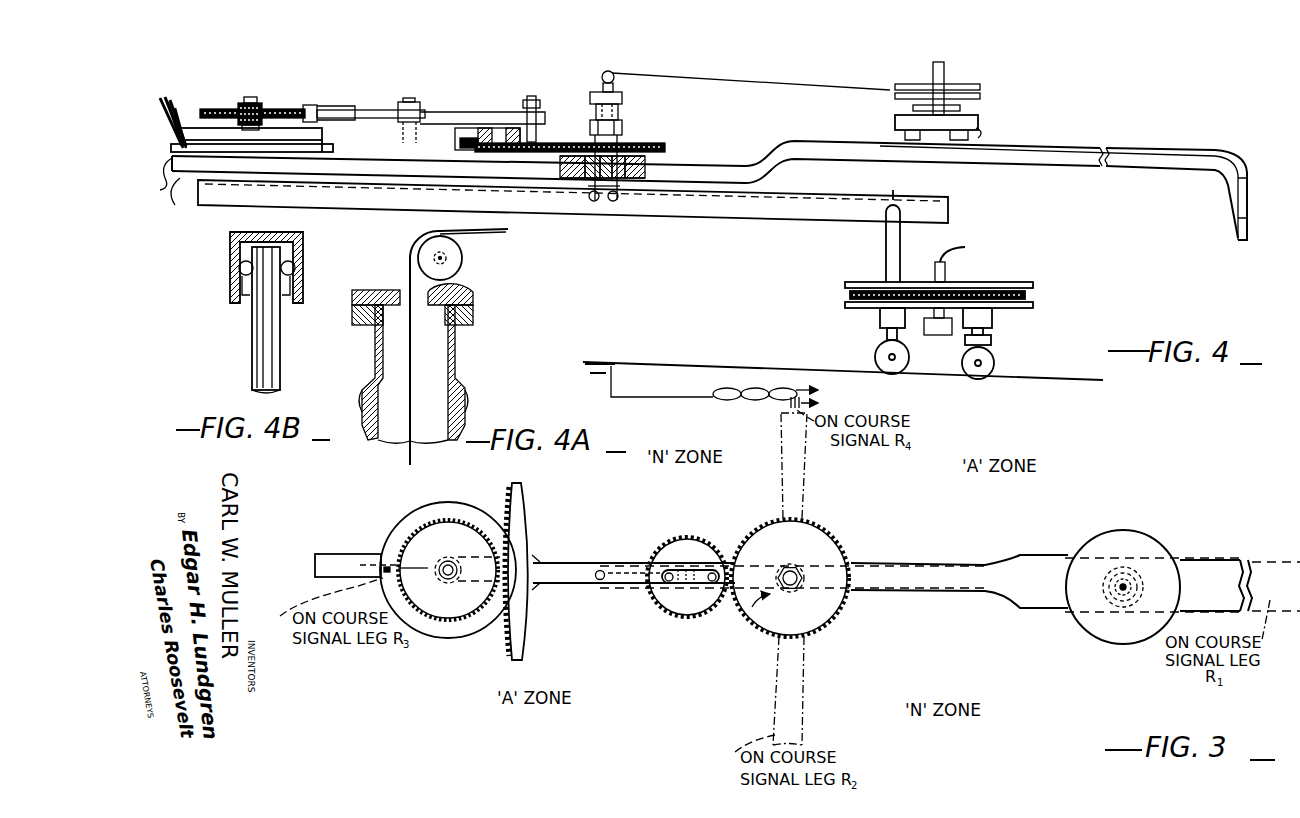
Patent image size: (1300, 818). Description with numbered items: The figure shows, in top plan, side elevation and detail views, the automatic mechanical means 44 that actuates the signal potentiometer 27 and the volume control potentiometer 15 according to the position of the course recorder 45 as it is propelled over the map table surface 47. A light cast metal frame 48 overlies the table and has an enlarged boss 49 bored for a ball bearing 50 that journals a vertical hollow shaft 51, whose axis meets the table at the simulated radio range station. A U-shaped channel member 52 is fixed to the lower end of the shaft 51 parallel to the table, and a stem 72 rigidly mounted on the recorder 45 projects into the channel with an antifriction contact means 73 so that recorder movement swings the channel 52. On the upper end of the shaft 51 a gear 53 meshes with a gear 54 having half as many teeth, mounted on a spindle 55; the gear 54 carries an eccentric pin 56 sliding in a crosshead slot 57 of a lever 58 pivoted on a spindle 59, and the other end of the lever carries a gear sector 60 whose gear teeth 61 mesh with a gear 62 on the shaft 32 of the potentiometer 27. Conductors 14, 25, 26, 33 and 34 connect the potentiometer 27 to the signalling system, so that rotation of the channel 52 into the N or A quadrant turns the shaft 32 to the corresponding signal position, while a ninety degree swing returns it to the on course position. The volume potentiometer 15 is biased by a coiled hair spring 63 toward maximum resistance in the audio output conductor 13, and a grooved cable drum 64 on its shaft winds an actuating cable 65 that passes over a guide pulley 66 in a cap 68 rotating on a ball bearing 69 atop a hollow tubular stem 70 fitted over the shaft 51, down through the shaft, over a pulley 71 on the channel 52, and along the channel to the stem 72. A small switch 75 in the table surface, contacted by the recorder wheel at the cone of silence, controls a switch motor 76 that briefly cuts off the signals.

In FIG. 4, the audio oscillator output circuit conductor 13 is at (985, 125).
In FIG. 4, the conductor 14 is at (182, 146).
In FIG. 4, the volume control potentiometer 15 is at (979, 131).
In FIG. 3, the volume control potentiometer 15 is at (1125, 540).
In FIG. 4, the conductor 25 is at (178, 150).
In FIG. 4, the conductor 26 is at (186, 146).
In FIG. 4, the potentiometer 27 is at (324, 140).
In FIG. 3, the potentiometer 27 is at (464, 648).
In FIG. 4, the shaft 32 is at (252, 103).
In FIG. 3, the shaft 32 is at (448, 564).
In FIG. 4, the conductor 33 is at (178, 182).
In FIG. 4, the conductor 34 is at (160, 175).
In FIG. 4, the automatic mechanical means 44 is at (1068, 132).
In FIG. 4, the course recorder 45 is at (1022, 312).
In FIG. 4, the map table surface 47 is at (740, 368).
In FIG. 4, the frame 48 is at (866, 163).
In FIG. 3, the frame 48 is at (1020, 556).
In FIG. 4, the boss 49 is at (650, 160).
In FIG. 3, the boss 49 is at (800, 575).
In FIG. 4, the ball bearing 50 is at (565, 172).
In FIG. 4, the vertical hollow shaft 51 is at (620, 128).
In FIG. 4A, the vertical hollow shaft 51 is at (467, 424).
In FIG. 3, the vertical hollow shaft 51 is at (785, 572).
In FIG. 4, the U-shaped channel member 52 is at (928, 338).
In FIG. 4B, the U-shaped channel member 52 is at (305, 244).
In FIG. 3, the U-shaped channel member 52 is at (328, 556).
In FIG. 4, the gear 53 is at (655, 143).
In FIG. 3, the gear 53 is at (810, 522).
In FIG. 4, the gear 54 is at (462, 143).
In FIG. 3, the gear 54 is at (700, 572).
In FIG. 4, the spindle 55 is at (490, 132).
In FIG. 3, the spindle 55 is at (672, 572).
In FIG. 4, the eccentrically mounted pin 56 is at (532, 100).
In FIG. 3, the eccentrically mounted pin 56 is at (714, 572).
In FIG. 4, the crosshead slot 57 is at (490, 114).
In FIG. 3, the crosshead slot 57 is at (668, 583).
In FIG. 4, the lever 58 is at (358, 110).
In FIG. 3, the lever 58 is at (625, 563).
In FIG. 4, the spindle 59 is at (413, 100).
In FIG. 3, the spindle 59 is at (600, 570).
In FIG. 4, the gear sector 60 is at (322, 112).
In FIG. 3, the gear sector 60 is at (533, 500).
In FIG. 4, the gear teeth 61 is at (312, 104).
In FIG. 3, the gear teeth 61 is at (513, 492).
In FIG. 3, the gear 62 is at (425, 522).
In FIG. 4, the coiled hair spring 63 is at (980, 106).
In FIG. 3, the coiled hair spring 63 is at (1126, 568).
In FIG. 4, the grooved cable drum 64 is at (978, 86).
In FIG. 4, the actuating cable 65 is at (820, 88).
In FIG. 4A, the actuating cable 65 is at (505, 234).
In FIG. 4, the guide pulley 66 is at (614, 72).
In FIG. 4A, the guide pulley 66 is at (463, 262).
In FIG. 4, the cap 68 is at (600, 86).
In FIG. 4A, the cap 68 is at (476, 296).
In FIG. 4A, the ball bearing 69 is at (475, 312).
In FIG. 4, the hollow tubular stem 70 is at (618, 106).
In FIG. 4A, the hollow tubular stem 70 is at (452, 370).
In FIG. 4, the pulley 71 is at (607, 204).
In FIG. 4, the stem 72 is at (898, 226).
In FIG. 4B, the stem 72 is at (282, 370).
In FIG. 4B, the antifriction contact means 73 is at (240, 300).
In FIG. 4, the switch 75 is at (592, 364).
In FIG. 4, the switch motor 76 is at (859, 399).